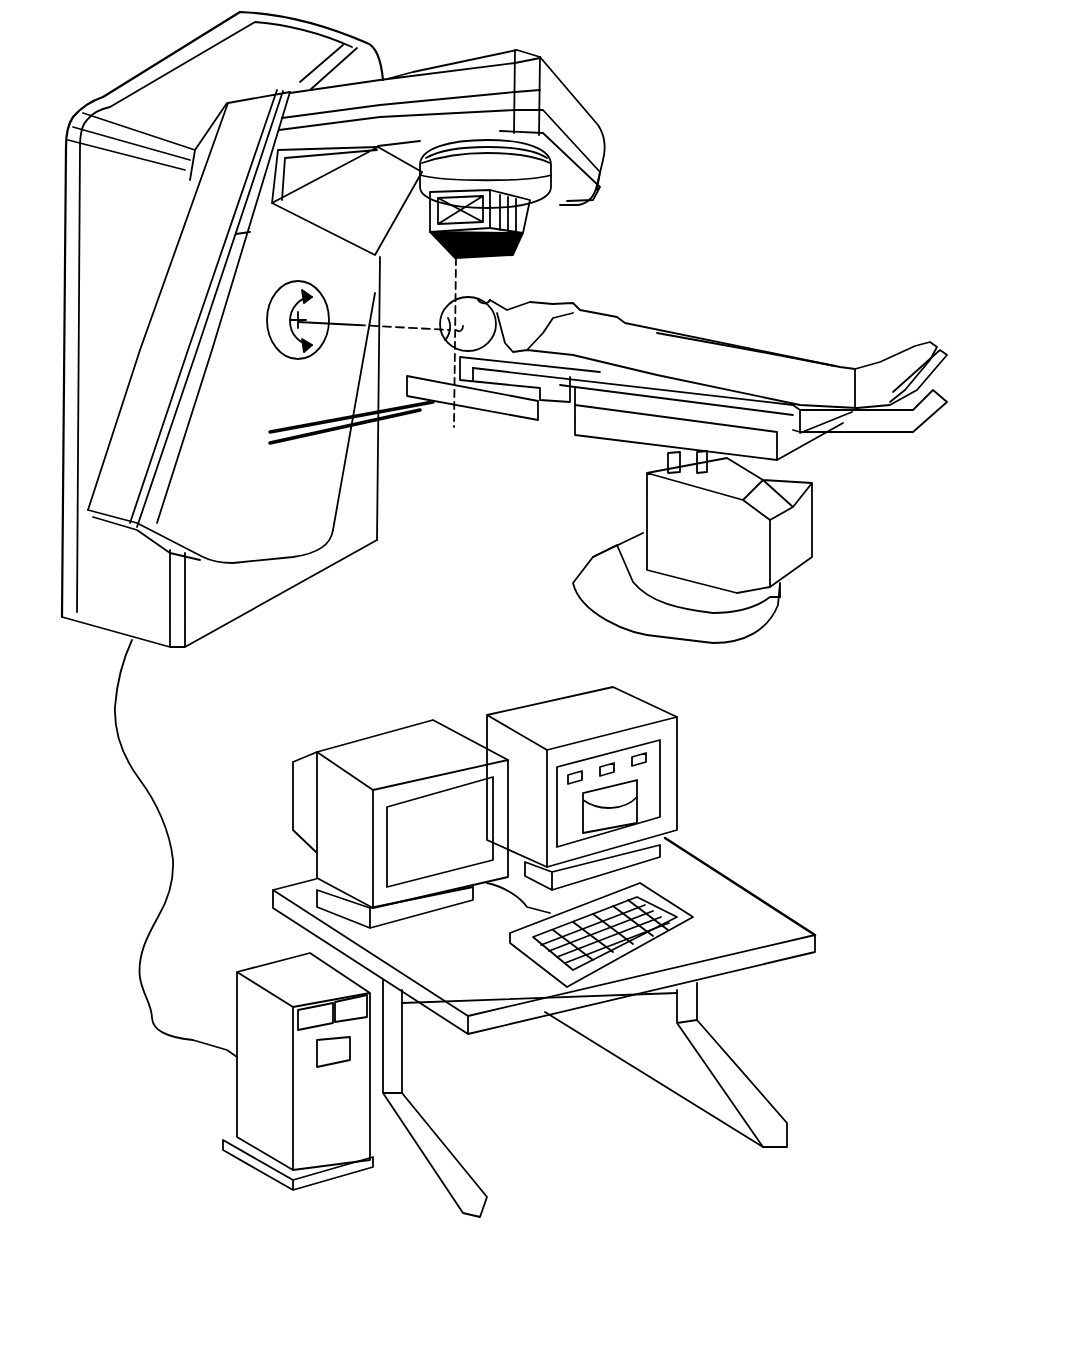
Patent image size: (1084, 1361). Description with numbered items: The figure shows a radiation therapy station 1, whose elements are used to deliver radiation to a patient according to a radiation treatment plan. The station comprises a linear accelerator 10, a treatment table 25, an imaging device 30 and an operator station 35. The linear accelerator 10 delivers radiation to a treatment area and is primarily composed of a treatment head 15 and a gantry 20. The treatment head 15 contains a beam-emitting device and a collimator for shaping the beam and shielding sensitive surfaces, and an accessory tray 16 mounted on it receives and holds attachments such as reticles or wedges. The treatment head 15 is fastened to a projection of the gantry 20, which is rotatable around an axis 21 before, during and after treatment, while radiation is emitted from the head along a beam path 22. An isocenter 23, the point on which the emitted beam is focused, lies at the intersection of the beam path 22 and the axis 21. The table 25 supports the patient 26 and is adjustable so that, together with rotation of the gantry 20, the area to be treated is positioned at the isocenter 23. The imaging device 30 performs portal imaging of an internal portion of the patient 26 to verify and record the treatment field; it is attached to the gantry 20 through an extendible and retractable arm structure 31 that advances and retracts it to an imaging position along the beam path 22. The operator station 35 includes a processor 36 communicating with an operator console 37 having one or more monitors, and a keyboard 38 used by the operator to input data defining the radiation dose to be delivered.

The radiation therapy station 1 is at (846, 64).
The linear accelerator 10 is at (547, 58).
The treatment head 15 is at (540, 213).
The accessory tray 16 is at (523, 237).
The gantry 20 is at (157, 308).
The axis 21 is at (357, 332).
The beam path 22 is at (460, 263).
The isocenter 23 is at (442, 332).
The treatment table 25 is at (617, 428).
The patient 26 is at (622, 327).
The imaging device 30 is at (480, 415).
The arm structure 31 is at (312, 435).
The operator station 35 is at (331, 700).
The processor 36 is at (237, 1107).
The operator console 37 is at (680, 776).
The keyboard 38 is at (673, 900).